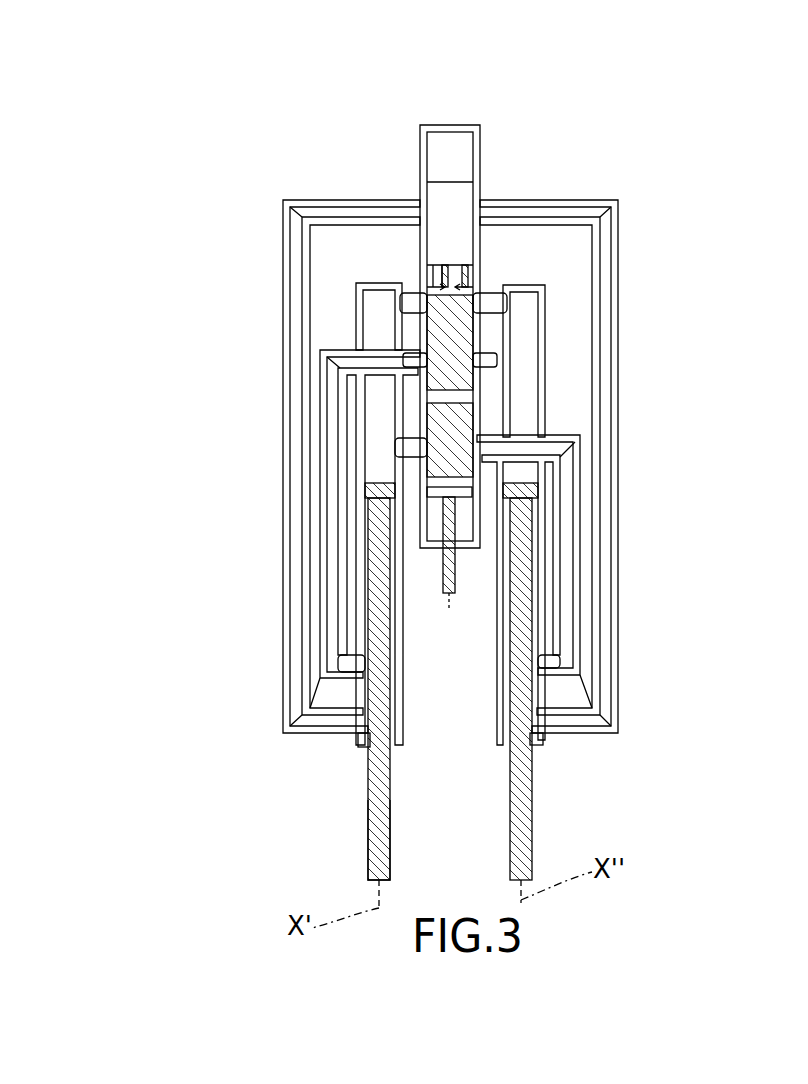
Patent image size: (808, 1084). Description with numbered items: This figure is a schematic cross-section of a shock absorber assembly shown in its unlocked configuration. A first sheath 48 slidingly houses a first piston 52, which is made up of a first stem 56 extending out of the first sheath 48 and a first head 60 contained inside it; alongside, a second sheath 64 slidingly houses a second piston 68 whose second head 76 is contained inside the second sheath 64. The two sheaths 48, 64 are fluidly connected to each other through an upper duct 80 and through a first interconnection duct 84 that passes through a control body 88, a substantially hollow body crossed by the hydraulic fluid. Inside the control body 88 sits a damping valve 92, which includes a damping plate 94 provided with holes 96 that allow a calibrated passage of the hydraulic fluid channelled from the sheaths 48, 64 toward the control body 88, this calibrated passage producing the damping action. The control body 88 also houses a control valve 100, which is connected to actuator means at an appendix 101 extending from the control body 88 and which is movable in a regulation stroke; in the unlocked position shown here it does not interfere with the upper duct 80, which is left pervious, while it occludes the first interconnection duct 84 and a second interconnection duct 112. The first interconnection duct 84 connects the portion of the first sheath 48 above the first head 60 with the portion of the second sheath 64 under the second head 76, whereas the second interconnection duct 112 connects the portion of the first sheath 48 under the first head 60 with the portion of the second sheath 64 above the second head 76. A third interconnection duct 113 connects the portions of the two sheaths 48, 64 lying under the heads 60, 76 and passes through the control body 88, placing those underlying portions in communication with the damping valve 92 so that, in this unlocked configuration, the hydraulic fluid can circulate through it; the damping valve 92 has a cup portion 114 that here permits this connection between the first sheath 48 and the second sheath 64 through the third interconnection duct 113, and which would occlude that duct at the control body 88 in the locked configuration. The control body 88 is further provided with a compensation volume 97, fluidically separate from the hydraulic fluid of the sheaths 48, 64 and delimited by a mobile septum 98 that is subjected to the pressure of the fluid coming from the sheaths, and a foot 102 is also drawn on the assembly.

The first sheath 48 is at (360, 530).
The first piston 52 is at (370, 748).
The first stem 56 is at (372, 830).
The first head 60 is at (380, 482).
The second sheath 64 is at (545, 330).
The second piston 68 is at (530, 760).
The second head 76 is at (505, 492).
The upper duct 80 is at (490, 303).
The first interconnection duct 84 is at (490, 470).
The control body 88 is at (482, 192).
The damping valve 92 is at (427, 287).
The damping plate 94 is at (465, 276).
The holes 96 is at (427, 277).
The compensation volume 97 is at (460, 155).
The mobile septum 98 is at (460, 178).
The control valve 100 is at (450, 350).
The appendix 101 is at (450, 595).
The foot 102 is at (335, 680).
The second interconnection duct 112 is at (320, 496).
The third interconnection duct 113 is at (285, 335).
The cup portion 114 is at (436, 278).